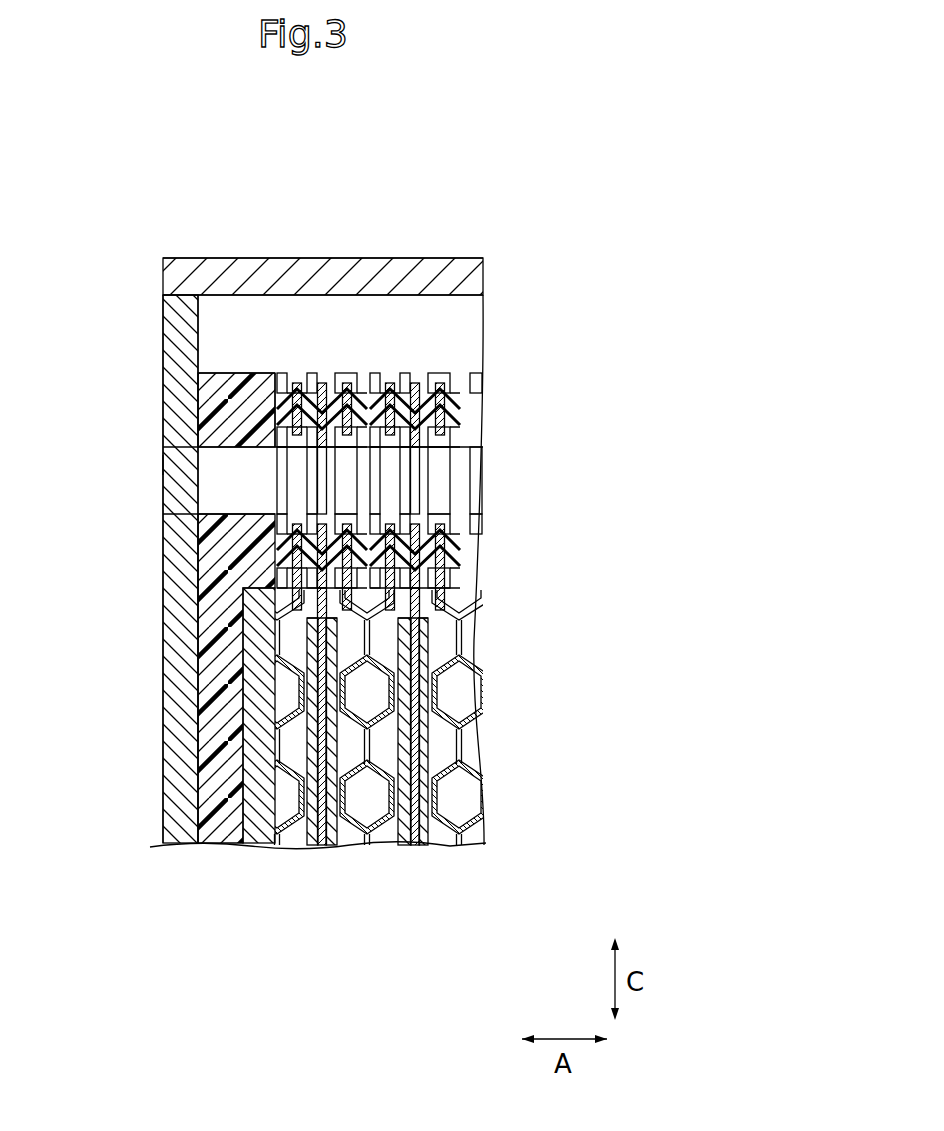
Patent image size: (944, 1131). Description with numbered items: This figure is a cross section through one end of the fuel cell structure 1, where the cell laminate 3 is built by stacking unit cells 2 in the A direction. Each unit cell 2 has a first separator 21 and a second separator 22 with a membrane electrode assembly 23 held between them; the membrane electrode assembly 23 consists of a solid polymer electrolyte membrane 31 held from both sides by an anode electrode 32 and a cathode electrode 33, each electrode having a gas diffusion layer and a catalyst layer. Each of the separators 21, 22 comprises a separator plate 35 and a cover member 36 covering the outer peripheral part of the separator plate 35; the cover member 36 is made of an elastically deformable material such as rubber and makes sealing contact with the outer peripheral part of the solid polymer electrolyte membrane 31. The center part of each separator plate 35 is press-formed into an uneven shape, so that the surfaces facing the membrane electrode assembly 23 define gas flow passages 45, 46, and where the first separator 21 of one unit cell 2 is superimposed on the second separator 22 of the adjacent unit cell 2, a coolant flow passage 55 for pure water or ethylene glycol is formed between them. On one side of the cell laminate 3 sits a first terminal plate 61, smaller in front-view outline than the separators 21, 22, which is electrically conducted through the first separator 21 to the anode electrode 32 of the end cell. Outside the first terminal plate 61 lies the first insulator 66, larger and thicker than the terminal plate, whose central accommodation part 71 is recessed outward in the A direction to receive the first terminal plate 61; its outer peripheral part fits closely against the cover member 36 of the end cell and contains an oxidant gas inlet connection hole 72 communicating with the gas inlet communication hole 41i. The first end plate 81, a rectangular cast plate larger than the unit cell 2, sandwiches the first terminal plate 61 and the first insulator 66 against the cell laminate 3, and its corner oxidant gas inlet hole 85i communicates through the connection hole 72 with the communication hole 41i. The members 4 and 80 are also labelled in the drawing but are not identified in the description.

The power storage device 1 is at (98, 284).
The unit cell 2 is at (460, 364).
The cell laminate 3 is at (486, 372).
The housing 4 is at (476, 250).
The first separator 21 is at (324, 366).
The second separator 22 is at (362, 397).
The membrane electrode assembly 23 is at (353, 356).
The solid polymer electrolyte membrane 31 is at (320, 852).
The anode electrode 32 is at (310, 850).
The cathode electrode 33 is at (328, 850).
The separator plate 35 is at (278, 847).
The cover member 36 is at (305, 357).
The gas inlet communication hole 41i is at (285, 455).
The gas flow passage 45 is at (294, 757).
The gas flow passage 46 is at (350, 745).
The coolant flow passage 55 is at (370, 797).
The first terminal plate 61 is at (200, 845).
The first insulator 66 is at (236, 373).
The accommodation part 71 is at (258, 597).
The oxidant gas inlet connection hole 72 is at (222, 448).
The top plate 80 is at (213, 258).
The first end plate 81 is at (170, 806).
The oxidant gas inlet hole 85i is at (163, 465).